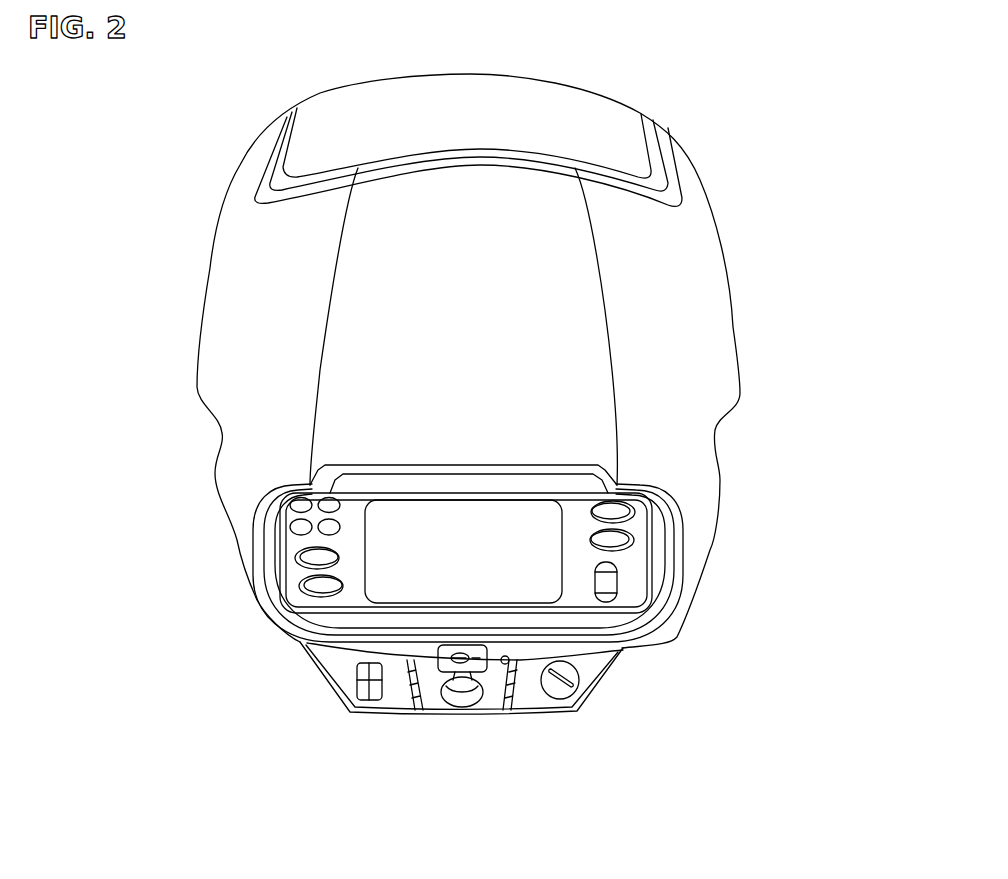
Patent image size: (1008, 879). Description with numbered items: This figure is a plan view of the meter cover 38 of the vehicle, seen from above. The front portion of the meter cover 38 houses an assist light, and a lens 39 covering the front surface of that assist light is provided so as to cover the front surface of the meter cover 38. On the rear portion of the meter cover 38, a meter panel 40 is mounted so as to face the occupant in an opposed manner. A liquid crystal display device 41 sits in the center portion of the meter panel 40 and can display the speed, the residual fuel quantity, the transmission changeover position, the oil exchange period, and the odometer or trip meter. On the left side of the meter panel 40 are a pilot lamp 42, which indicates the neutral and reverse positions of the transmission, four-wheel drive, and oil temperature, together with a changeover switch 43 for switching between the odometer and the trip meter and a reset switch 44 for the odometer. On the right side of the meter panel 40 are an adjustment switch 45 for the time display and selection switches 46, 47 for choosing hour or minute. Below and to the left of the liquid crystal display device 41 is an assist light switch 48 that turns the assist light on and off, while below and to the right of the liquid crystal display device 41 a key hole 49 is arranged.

The meter cover 38 is at (723, 307).
The lens 39 is at (577, 98).
The meter panel 40 is at (627, 613).
The liquid crystal display device 41 is at (450, 568).
The pilot lamp 42 is at (300, 525).
The changeover switch 43 is at (310, 560).
The reset switch 44 is at (318, 590).
The adjustment switch 45 is at (612, 582).
The selection switch 46 is at (620, 512).
The selection switch 47 is at (620, 540).
The assist light switch 48 is at (365, 700).
The key hole 49 is at (562, 690).